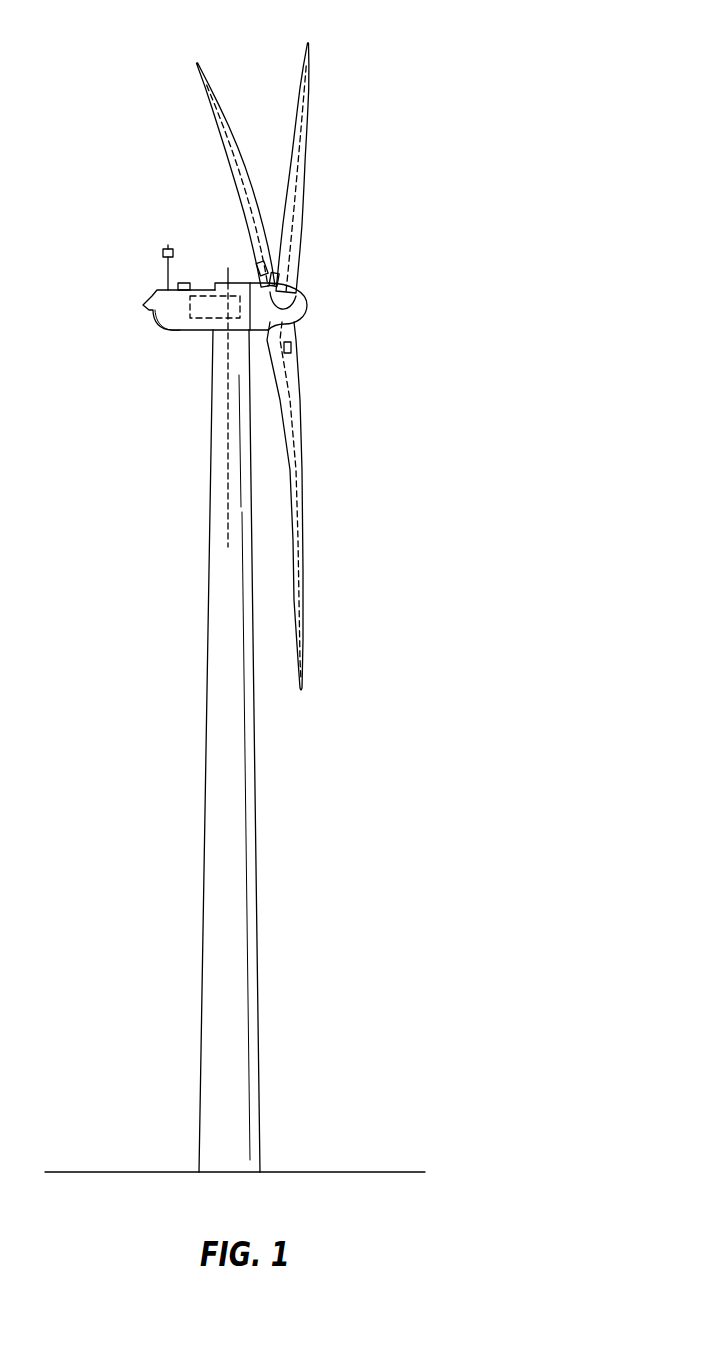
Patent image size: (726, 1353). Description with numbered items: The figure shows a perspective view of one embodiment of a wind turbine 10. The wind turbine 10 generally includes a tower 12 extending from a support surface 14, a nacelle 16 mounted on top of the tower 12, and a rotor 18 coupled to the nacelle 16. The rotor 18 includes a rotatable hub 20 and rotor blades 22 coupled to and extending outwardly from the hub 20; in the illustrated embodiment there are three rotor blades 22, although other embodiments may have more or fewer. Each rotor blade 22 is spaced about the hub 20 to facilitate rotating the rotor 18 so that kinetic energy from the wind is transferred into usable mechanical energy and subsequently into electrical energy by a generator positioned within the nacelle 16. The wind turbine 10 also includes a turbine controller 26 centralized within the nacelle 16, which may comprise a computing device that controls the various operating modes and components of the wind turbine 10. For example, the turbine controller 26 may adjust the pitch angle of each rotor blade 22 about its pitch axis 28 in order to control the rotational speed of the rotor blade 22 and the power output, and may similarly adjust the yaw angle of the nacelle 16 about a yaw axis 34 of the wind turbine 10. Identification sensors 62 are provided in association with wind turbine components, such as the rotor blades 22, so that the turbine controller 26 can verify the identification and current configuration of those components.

The wind turbine 10 is at (432, 154).
The tower 12 is at (230, 720).
The support surface 14 is at (123, 1172).
The nacelle 16 is at (193, 284).
The rotor 18 is at (314, 273).
The rotatable hub 20 is at (305, 313).
The rotor blade 22 is at (269, 366).
The turbine controller 26 is at (208, 290).
The pitch axis 28 is at (233, 177).
The yaw axis 34 is at (227, 387).
The identification sensor 62 is at (257, 270).